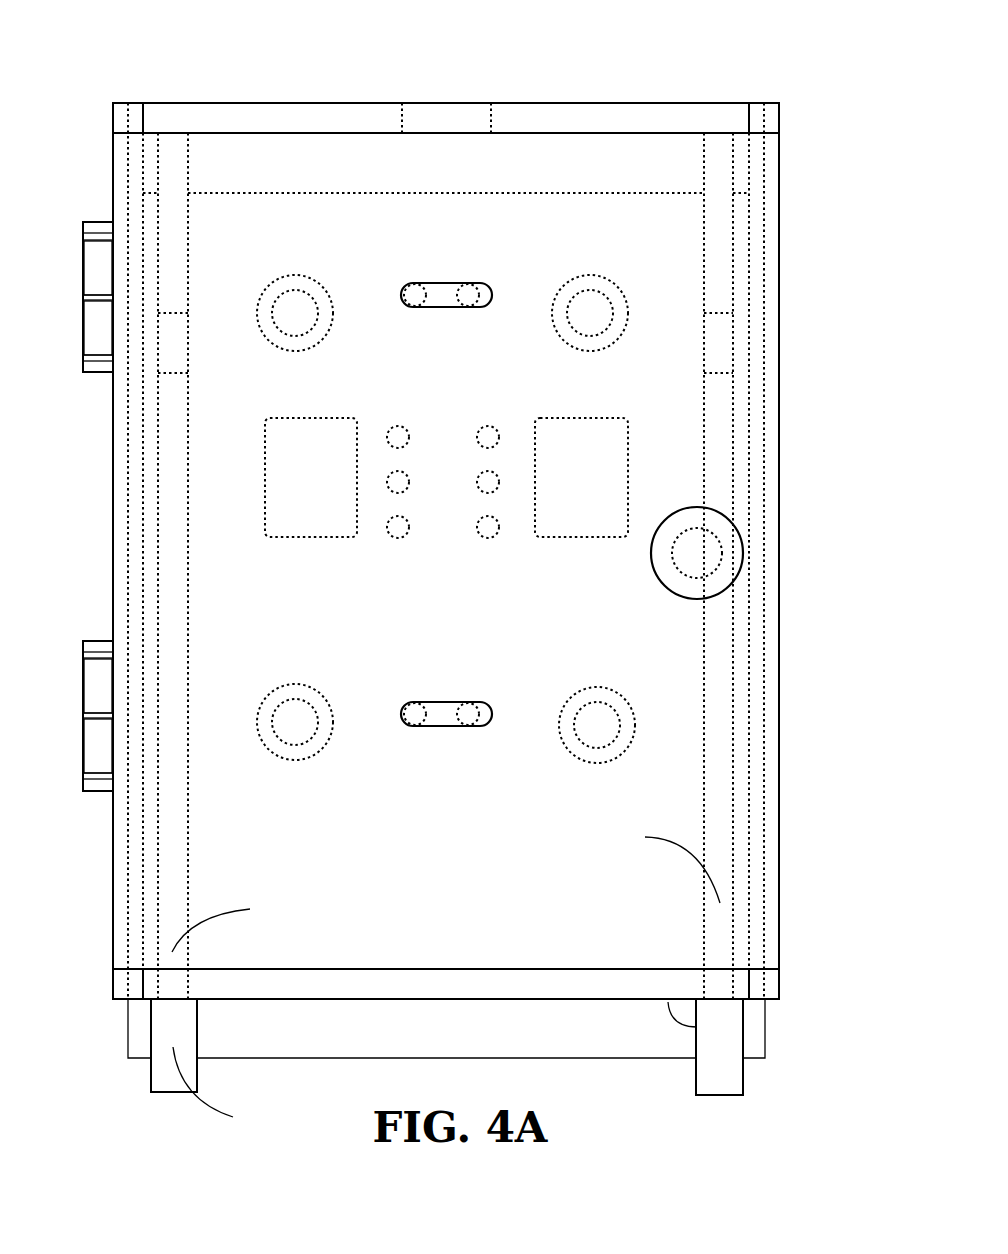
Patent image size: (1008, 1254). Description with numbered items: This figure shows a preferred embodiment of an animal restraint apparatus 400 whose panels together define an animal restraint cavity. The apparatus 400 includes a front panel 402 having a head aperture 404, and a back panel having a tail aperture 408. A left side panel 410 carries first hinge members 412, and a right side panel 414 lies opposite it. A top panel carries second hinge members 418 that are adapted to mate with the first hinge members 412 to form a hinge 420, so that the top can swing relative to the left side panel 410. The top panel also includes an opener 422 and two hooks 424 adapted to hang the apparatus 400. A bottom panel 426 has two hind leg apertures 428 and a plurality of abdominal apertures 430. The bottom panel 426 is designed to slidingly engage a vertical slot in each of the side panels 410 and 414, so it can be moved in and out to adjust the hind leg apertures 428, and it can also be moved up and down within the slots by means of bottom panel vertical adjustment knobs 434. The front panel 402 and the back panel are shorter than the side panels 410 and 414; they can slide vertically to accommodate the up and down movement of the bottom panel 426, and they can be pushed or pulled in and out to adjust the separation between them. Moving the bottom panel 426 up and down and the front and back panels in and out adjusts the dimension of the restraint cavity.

The animal restraint apparatus 400 is at (815, 222).
The front panel 402 is at (743, 1040).
The head aperture 404 is at (448, 962).
The tail aperture 408 is at (447, 98).
The left side panel 410 is at (112, 505).
The first hinge members 412 is at (100, 374).
The right side panel 414 is at (780, 404).
The second hinge members 418 is at (98, 268).
The hinge 420 is at (98, 212).
The opener 422 is at (696, 600).
The hooks 424 is at (448, 283).
The bottom panel 426 is at (732, 838).
The hind leg apertures 428 is at (446, 477).
The abdominal apertures 430 is at (398, 527).
The bottom panel vertical adjustment knobs 434 is at (295, 730).